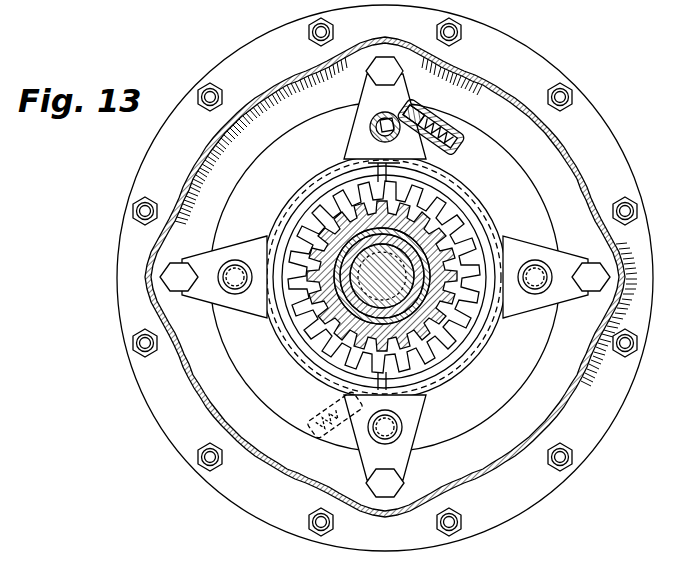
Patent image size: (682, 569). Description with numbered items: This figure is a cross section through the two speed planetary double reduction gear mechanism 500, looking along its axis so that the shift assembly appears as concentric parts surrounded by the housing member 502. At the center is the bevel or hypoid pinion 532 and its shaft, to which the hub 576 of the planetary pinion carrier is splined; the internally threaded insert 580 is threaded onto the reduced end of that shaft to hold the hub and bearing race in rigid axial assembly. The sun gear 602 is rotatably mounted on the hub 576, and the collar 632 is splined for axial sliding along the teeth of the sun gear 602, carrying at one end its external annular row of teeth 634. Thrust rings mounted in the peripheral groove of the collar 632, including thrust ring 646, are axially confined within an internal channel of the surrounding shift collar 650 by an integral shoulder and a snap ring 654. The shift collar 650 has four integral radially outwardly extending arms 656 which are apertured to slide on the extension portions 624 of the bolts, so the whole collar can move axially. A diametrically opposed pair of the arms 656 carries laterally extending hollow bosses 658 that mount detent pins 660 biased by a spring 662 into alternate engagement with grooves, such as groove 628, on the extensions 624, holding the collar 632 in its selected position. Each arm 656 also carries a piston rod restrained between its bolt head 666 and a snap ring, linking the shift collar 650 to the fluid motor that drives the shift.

The two speed planetary double reduction gear mechanism 500 is at (198, 45).
The housing member 502 is at (283, 88).
The bolt head 666 is at (372, 70).
The arms 656 is at (420, 90).
The detent pins 660 is at (428, 119).
The spring 662 is at (452, 125).
The hollow bosses 658 is at (468, 143).
The extension portions 624 is at (374, 125).
The detent receiving groove 628 is at (376, 133).
The external annular row of teeth 634 is at (452, 205).
The collar 632 is at (474, 243).
The thrust ring 646 is at (478, 262).
The hub 576 is at (430, 268).
The bevel or hypoid pinion 532 is at (382, 276).
The internally threaded insert 580 is at (382, 276).
The sun gear 602 is at (323, 316).
The shift collar 650 is at (476, 383).
The snap ring 654 is at (461, 372).